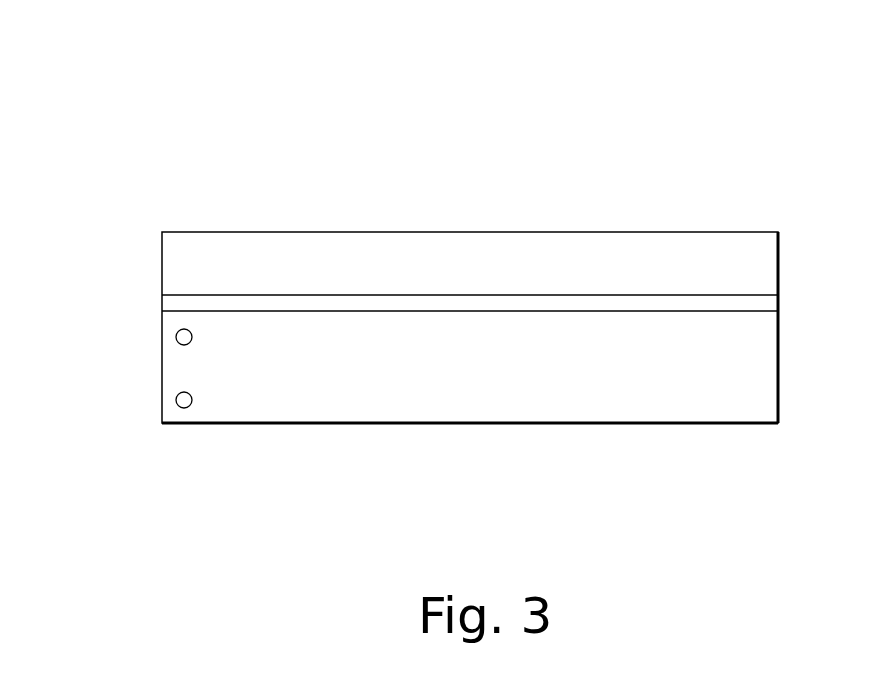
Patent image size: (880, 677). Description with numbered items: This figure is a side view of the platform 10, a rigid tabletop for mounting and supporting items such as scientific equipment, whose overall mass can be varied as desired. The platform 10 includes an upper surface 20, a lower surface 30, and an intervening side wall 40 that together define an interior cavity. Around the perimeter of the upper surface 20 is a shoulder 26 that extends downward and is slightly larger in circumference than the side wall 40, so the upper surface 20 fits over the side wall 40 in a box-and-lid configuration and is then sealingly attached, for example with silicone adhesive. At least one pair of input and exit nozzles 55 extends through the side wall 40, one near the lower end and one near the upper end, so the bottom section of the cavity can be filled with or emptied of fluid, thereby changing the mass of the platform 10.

The platform 10 is at (243, 165).
The upper surface 20 is at (595, 232).
The shoulder 26 is at (452, 263).
The lower surface 30 is at (583, 423).
The side wall 40 is at (360, 398).
The input and exit nozzles 55 is at (184, 400).